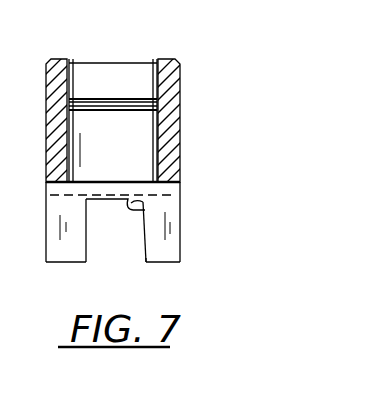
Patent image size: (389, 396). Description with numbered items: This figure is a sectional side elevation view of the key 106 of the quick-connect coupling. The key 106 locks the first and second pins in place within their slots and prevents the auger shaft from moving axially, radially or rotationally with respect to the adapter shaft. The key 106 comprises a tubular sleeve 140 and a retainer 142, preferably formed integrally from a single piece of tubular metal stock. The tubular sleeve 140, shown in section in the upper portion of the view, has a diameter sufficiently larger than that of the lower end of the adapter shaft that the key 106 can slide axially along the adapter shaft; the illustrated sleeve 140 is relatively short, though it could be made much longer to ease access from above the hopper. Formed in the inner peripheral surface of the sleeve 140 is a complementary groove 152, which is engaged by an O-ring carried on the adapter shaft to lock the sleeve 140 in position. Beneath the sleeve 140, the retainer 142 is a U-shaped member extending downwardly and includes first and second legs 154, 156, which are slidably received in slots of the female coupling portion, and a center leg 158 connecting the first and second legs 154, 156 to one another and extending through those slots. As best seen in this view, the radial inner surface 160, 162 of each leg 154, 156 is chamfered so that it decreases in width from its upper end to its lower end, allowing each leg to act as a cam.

The key 106 is at (131, 159).
The tubular sleeve 140 is at (177, 55).
The complementary groove 152 is at (160, 105).
The center leg 158 is at (145, 204).
The retainer 142 is at (181, 238).
The first leg 154 is at (181, 262).
The second leg 156 is at (52, 263).
The radial inner surface 162 is at (85, 253).
The radial inner surface 160 is at (142, 262).